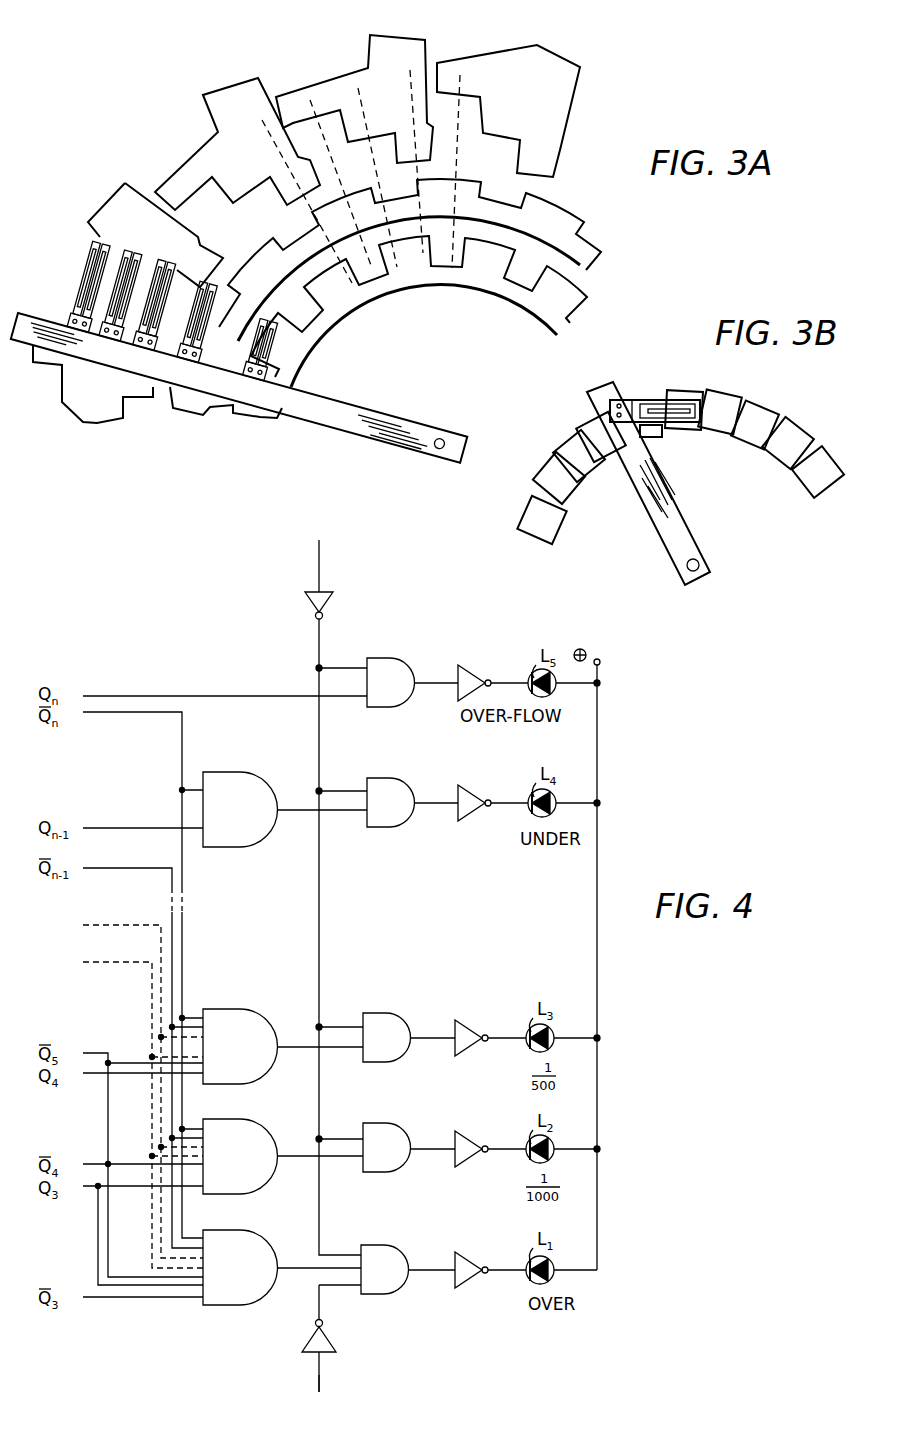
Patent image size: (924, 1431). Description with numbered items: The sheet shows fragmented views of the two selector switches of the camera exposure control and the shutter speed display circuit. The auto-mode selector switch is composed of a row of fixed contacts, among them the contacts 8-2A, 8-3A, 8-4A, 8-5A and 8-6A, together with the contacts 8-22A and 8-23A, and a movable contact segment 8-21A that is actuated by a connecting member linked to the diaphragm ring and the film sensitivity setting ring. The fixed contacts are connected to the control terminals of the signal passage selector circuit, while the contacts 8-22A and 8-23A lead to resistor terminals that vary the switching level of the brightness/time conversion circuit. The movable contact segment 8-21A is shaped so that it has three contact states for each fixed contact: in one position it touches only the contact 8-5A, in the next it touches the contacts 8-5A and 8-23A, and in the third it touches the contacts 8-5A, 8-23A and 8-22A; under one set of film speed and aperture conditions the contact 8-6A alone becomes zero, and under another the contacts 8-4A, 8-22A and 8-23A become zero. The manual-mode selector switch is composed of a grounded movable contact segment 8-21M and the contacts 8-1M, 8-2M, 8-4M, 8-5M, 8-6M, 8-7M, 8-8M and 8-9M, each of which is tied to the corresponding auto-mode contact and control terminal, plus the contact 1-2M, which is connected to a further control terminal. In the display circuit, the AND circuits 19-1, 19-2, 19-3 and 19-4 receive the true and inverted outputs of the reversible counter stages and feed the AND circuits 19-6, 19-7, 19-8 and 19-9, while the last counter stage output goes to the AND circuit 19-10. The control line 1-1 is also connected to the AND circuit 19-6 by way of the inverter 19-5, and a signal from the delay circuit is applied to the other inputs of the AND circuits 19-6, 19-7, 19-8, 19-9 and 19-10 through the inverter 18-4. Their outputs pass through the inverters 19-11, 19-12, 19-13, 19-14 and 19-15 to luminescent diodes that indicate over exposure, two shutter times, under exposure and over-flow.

In FIG. 3A, the contact 8-2A is at (83, 405).
In FIG. 3A, the contact 8-3A is at (108, 215).
In FIG. 3A, the contact 8-4A is at (226, 100).
In FIG. 3A, the contact 8-5A is at (385, 48).
In FIG. 3A, the contact 8-6A is at (546, 60).
In FIG. 3A, the movable contact segment 8-21A is at (322, 418).
In FIG. 3A, the contact 8-22A is at (531, 205).
In FIG. 3A, the contact 8-23A is at (482, 300).
In FIG. 3B, the contact 1-2M is at (528, 528).
In FIG. 3B, the contact 8-1M is at (558, 478).
In FIG. 3B, the contact 8-2M is at (586, 452).
In FIG. 3B, the contact 8-4M is at (652, 440).
In FIG. 3B, the contact 8-5M is at (680, 400).
In FIG. 3B, the contact 8-6M is at (725, 410).
In FIG. 3B, the contact 8-7M is at (768, 422).
In FIG. 3B, the contact 8-8M is at (798, 442).
In FIG. 3B, the contact 8-9M is at (825, 475).
In FIG. 3B, the grounded movable contact segment 8-21M is at (680, 538).
In FIG. 4, the inverter 18-4 is at (322, 595).
In FIG. 4, the AND circuit 19-1 is at (228, 1292).
In FIG. 4, the AND circuit 19-2 is at (232, 1182).
In FIG. 4, the AND circuit 19-3 is at (226, 1075).
In FIG. 4, the AND circuit 19-4 is at (240, 840).
In FIG. 4, the inverter 19-5 is at (328, 1345).
In FIG. 4, the AND circuit 19-6 is at (380, 1288).
In FIG. 4, the AND circuit 19-7 is at (380, 1166).
In FIG. 4, the AND circuit 19-8 is at (382, 1055).
In FIG. 4, the AND circuit 19-9 is at (384, 820).
In FIG. 4, the AND circuit 19-10 is at (384, 700).
In FIG. 4, the inverter 19-11 is at (458, 1262).
In FIG. 4, the inverter 19-12 is at (466, 1142).
In FIG. 4, the inverter 19-13 is at (466, 1031).
In FIG. 4, the inverter 19-14 is at (468, 796).
In FIG. 4, the inverter 19-15 is at (468, 676).
In FIG. 4, the control line 1-1 is at (318, 1386).